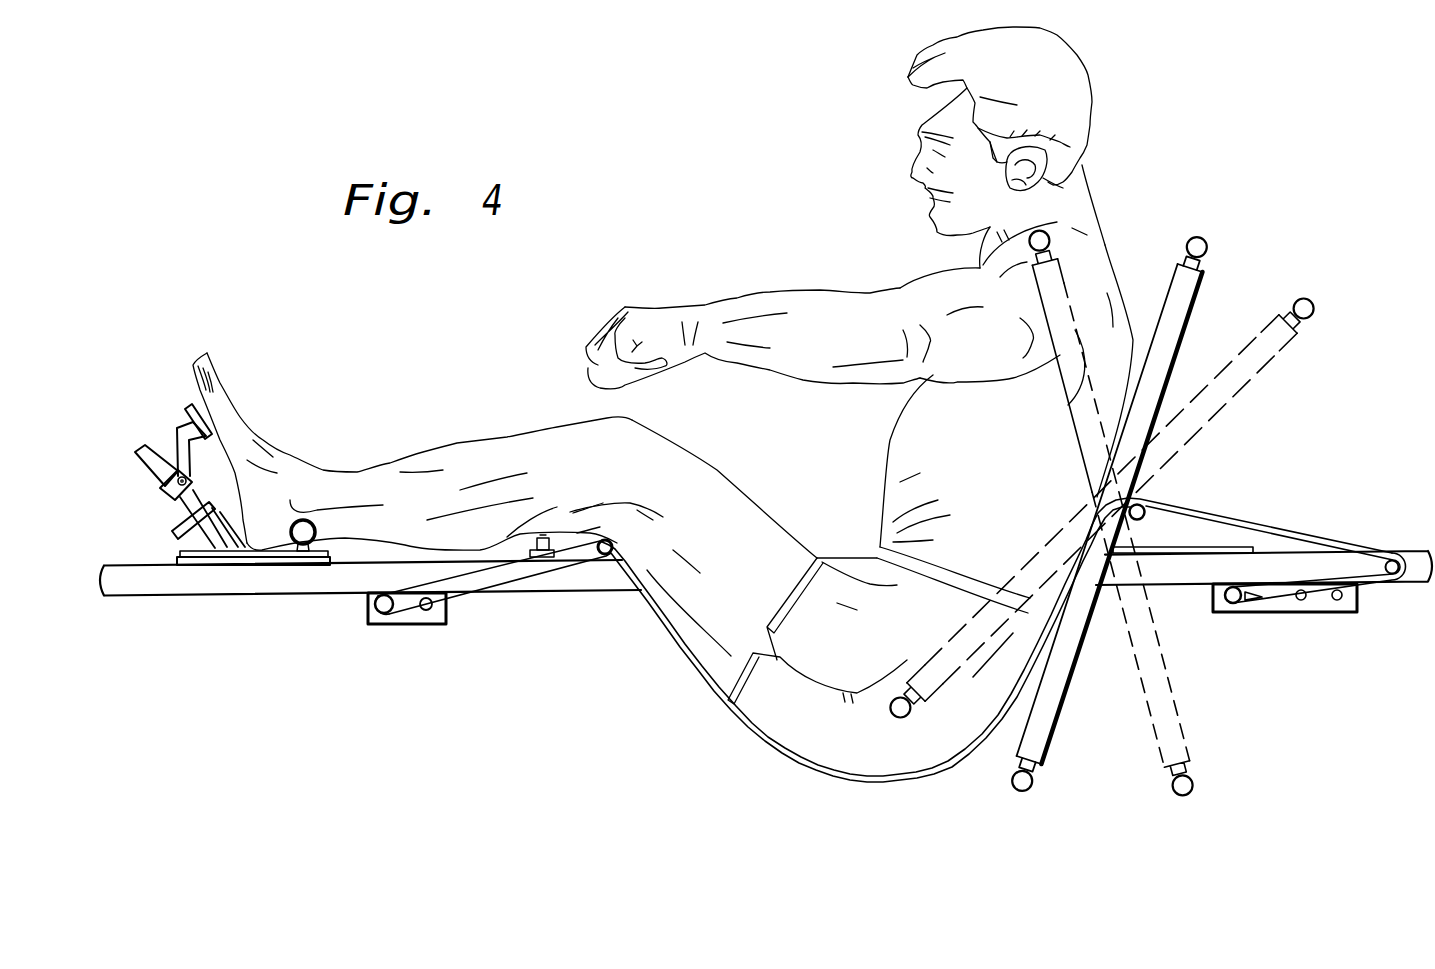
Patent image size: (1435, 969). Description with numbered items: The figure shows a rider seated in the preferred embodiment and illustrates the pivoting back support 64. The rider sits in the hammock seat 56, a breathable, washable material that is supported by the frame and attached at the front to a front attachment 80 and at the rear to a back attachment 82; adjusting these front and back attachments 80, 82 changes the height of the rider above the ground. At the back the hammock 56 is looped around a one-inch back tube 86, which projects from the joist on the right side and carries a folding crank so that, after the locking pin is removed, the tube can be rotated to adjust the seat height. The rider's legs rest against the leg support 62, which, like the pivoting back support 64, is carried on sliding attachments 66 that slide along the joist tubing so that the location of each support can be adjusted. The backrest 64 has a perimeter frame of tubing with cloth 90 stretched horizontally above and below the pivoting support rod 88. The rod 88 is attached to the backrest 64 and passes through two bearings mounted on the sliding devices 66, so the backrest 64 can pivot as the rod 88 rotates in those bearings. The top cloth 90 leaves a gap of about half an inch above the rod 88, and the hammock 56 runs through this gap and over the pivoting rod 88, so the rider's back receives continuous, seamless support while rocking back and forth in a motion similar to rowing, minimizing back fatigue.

The hammock seat 56 is at (838, 776).
The leg support 62 is at (597, 553).
The pivoting back support 64 is at (1203, 234).
The sliding attachments 66 is at (1230, 548).
The front attachment 80 is at (410, 615).
The back attachment 82 is at (1320, 603).
The back tube 86 is at (1225, 612).
The pivoting support rod 88 is at (1150, 516).
The cloth 90 is at (1162, 292).